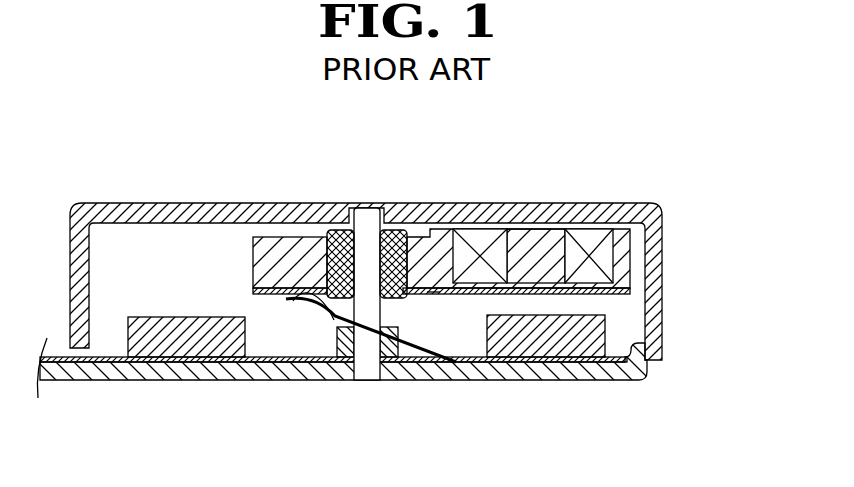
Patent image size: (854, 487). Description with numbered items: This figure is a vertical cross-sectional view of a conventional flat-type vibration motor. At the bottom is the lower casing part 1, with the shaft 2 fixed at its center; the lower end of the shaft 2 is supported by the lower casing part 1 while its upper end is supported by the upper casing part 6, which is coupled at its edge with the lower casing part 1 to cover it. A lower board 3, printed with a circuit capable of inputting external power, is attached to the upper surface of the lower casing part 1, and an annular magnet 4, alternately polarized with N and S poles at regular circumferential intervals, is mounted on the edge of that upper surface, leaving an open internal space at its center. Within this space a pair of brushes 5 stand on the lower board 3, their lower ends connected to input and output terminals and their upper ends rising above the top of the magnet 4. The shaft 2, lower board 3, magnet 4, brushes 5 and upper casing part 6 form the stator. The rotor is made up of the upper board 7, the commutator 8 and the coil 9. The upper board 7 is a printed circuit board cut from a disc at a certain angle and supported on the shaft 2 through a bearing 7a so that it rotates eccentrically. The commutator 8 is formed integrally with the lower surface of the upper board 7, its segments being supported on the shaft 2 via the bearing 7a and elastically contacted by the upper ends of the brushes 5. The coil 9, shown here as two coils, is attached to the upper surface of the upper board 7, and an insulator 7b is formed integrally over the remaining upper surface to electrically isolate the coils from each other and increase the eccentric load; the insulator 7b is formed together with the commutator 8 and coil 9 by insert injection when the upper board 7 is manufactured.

The lower casing part 1 is at (153, 372).
The shaft 2 is at (368, 372).
The lower board 3 is at (284, 358).
The annular magnet 4 is at (557, 345).
The brushes 5 is at (293, 301).
The upper casing part 6 is at (220, 213).
The upper board 7 is at (558, 237).
The bearing 7a is at (394, 231).
The insulator 7b is at (542, 237).
The commutator 8 is at (427, 292).
The coil 9 is at (484, 237).